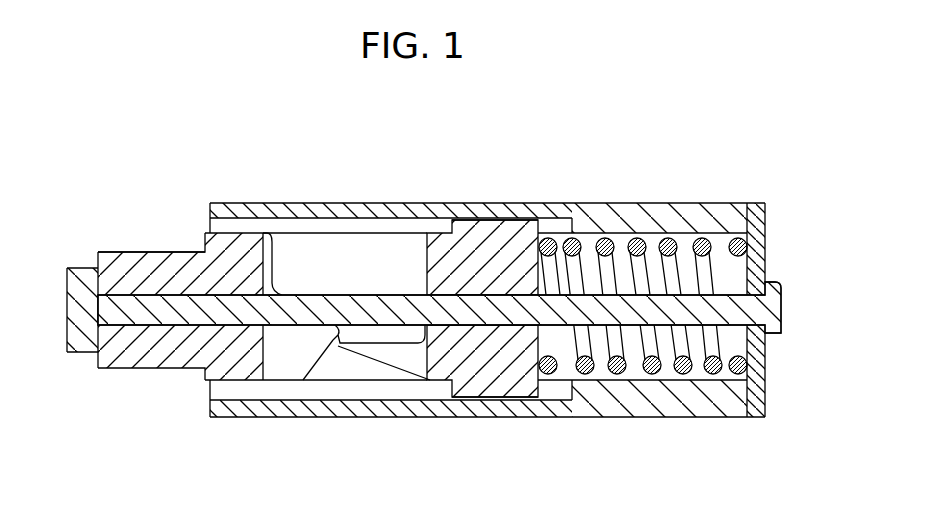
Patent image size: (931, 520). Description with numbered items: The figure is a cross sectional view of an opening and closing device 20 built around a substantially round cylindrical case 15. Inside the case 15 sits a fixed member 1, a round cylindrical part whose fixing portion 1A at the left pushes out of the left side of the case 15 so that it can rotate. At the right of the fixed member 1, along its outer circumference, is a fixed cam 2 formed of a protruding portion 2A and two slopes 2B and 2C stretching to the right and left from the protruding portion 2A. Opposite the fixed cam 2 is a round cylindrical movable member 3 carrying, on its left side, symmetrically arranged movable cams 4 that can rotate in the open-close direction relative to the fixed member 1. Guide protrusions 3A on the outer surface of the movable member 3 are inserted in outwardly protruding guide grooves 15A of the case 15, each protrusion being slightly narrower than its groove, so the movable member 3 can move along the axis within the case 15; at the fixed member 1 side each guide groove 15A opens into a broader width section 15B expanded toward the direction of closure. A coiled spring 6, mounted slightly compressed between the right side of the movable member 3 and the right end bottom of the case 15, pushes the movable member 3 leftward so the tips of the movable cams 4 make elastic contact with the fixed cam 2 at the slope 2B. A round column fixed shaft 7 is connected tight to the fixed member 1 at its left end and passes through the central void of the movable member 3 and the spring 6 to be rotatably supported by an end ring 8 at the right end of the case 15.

The opening and closing device 20 is at (772, 175).
The fixed member 1 is at (182, 357).
The fixing portion 1A is at (160, 257).
The fixed cam 2 is at (295, 353).
The protruding portion 2A is at (340, 320).
The slope 2B is at (318, 362).
The slope 2C is at (316, 307).
The movable member 3 is at (497, 362).
The guide protrusion 3A is at (486, 230).
The movable cam 4 is at (373, 360).
The spring 6 is at (625, 377).
The fixed shaft 7 is at (142, 313).
The end ring 8 is at (755, 405).
The case 15 is at (645, 210).
The guide groove 15A is at (557, 223).
The broader width section 15B is at (393, 223).